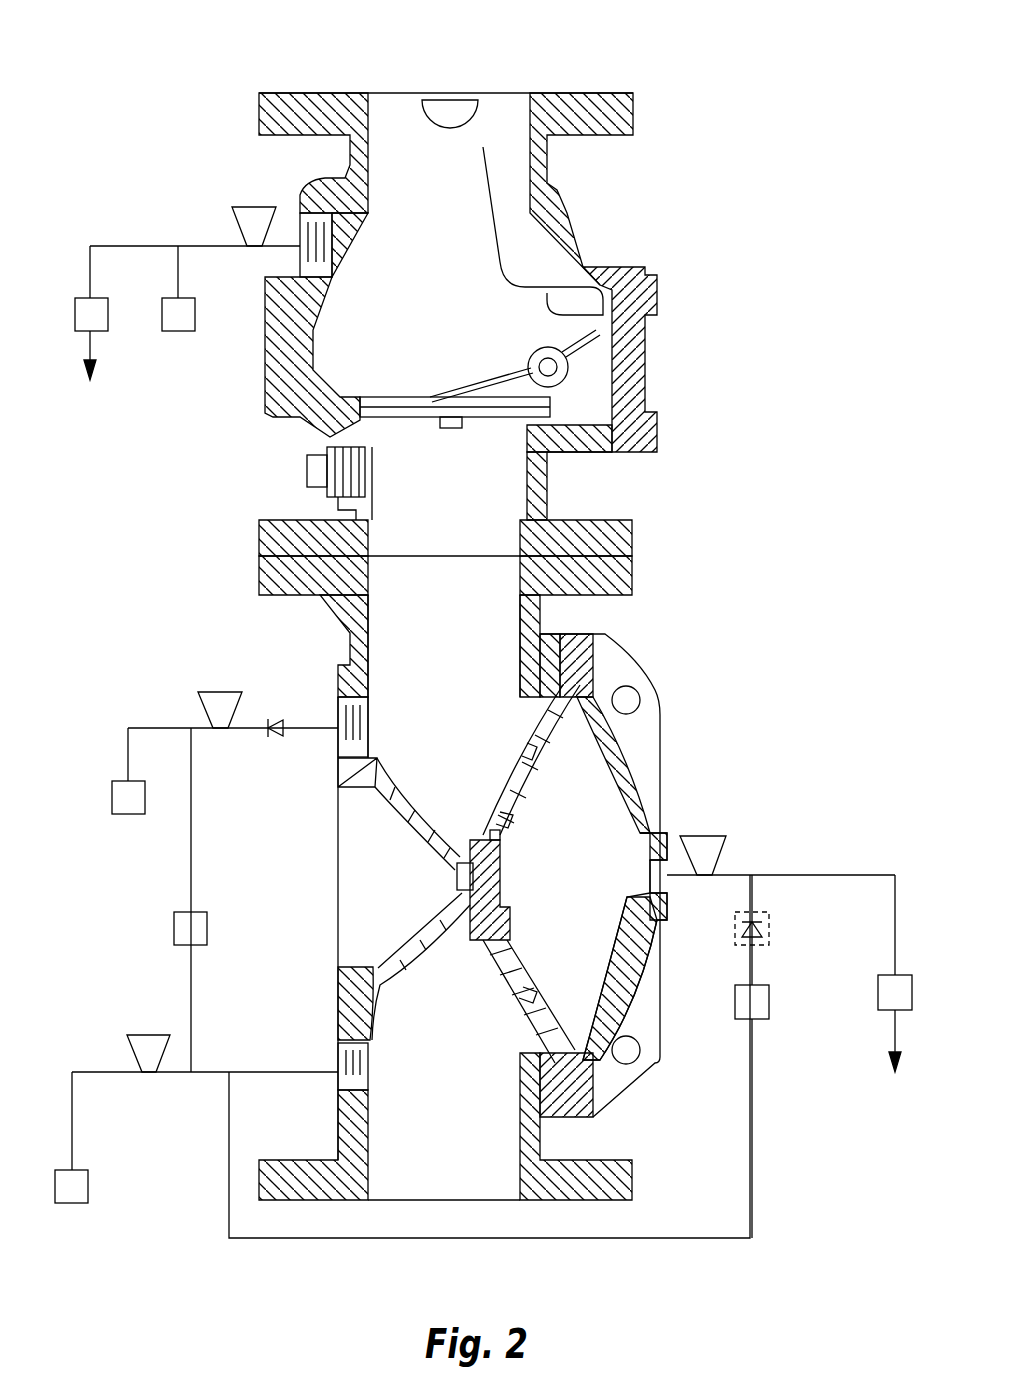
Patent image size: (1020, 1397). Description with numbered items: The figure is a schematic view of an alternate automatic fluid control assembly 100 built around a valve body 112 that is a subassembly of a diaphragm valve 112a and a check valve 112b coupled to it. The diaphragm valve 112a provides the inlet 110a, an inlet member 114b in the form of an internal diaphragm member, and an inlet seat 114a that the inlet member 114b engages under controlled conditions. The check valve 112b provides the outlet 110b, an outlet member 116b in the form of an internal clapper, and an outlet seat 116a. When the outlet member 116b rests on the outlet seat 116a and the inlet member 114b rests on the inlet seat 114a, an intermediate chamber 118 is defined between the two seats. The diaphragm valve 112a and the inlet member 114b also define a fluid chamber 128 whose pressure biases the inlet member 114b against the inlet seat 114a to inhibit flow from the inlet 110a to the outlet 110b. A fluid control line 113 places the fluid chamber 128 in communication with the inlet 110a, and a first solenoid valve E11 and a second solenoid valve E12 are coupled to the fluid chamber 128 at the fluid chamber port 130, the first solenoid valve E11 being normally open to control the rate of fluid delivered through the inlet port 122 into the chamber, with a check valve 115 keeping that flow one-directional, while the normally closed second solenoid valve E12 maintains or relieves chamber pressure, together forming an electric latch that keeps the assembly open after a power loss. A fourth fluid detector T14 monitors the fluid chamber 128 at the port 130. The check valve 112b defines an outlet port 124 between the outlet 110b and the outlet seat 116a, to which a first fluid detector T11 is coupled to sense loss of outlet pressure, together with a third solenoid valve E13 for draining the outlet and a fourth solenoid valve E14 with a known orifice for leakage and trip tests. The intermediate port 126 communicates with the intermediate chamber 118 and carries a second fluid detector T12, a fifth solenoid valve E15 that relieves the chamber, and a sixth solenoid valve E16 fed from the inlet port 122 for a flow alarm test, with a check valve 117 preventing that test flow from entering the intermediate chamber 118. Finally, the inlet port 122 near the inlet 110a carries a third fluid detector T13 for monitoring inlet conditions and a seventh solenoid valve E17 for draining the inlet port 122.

The automatic fluid control assembly 100 is at (545, 650).
The inlet 110a is at (485, 1215).
The outlet 110b is at (510, 84).
The valve body 112 is at (505, 554).
The diaphragm valve 112a is at (605, 595).
The check valve 112b is at (605, 520).
The fluid control line 113 is at (258, 1240).
The inlet seat 114a is at (483, 923).
The inlet member 114b is at (502, 875).
The check valve 115 is at (770, 925).
The outlet seat 116a is at (395, 425).
The outlet member 116b is at (372, 400).
The check valve 117 is at (276, 740).
The intermediate chamber 118 is at (462, 646).
The inlet port 122 is at (322, 1090).
The outlet port 124 is at (290, 258).
The intermediate port 126 is at (322, 708).
The fluid chamber 128 is at (580, 857).
The fluid chamber port 130 is at (672, 882).
The first fluid detector T11 is at (248, 205).
The second fluid detector T12 is at (212, 690).
The third fluid detector T13 is at (142, 1033).
The fourth fluid detector T14 is at (705, 834).
The first electrically controlled solenoid valve E11 is at (733, 1005).
The second electrically controlled solenoid valve E12 is at (876, 995).
The third solenoid valve E13 is at (182, 335).
The fourth solenoid valve E14 is at (98, 335).
The fifth solenoid valve E15 is at (110, 797).
The sixth solenoid valve E16 is at (210, 940).
The seventh solenoid valve E17 is at (90, 1178).